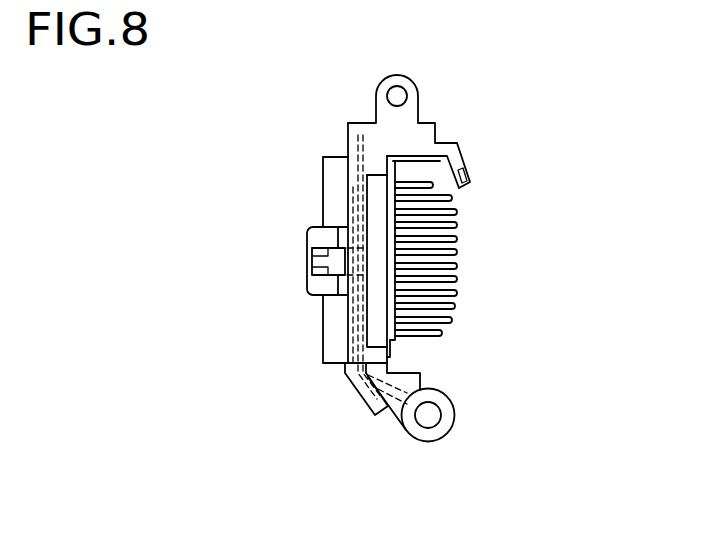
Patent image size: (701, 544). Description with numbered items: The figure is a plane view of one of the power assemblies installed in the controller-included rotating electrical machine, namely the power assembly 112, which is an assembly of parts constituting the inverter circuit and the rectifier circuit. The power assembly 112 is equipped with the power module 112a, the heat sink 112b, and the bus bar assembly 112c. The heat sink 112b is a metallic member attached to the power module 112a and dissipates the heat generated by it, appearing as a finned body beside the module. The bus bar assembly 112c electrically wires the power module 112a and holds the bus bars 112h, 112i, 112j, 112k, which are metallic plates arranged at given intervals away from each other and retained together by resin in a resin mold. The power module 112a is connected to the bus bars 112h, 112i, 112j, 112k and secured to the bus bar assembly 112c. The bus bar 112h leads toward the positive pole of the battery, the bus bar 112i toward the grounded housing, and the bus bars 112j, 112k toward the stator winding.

The power assembly 112 is at (568, 74).
The power module 112a is at (373, 191).
The heat sink 112b is at (394, 197).
The bus bar assembly 112c is at (380, 145).
The bus bar 112h is at (348, 355).
The bus bar 112i is at (402, 418).
The bus bar 112j is at (347, 318).
The bus bar 112k is at (345, 208).